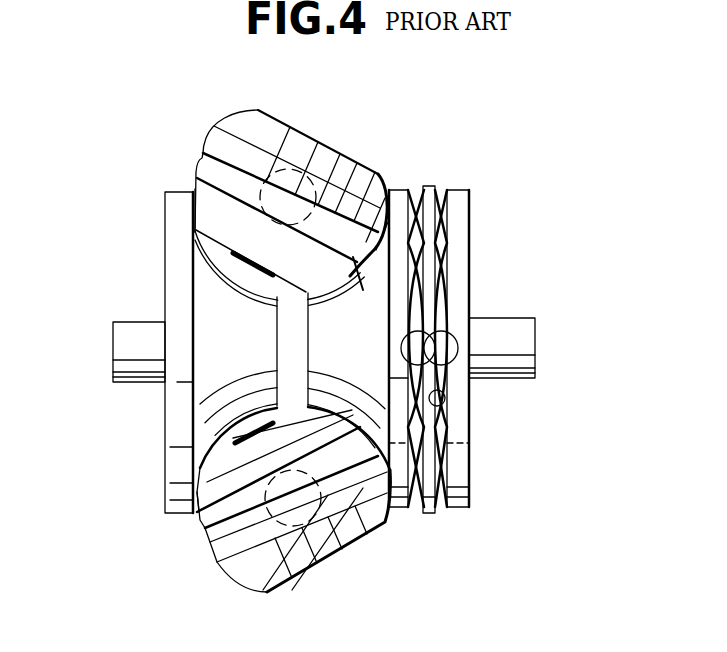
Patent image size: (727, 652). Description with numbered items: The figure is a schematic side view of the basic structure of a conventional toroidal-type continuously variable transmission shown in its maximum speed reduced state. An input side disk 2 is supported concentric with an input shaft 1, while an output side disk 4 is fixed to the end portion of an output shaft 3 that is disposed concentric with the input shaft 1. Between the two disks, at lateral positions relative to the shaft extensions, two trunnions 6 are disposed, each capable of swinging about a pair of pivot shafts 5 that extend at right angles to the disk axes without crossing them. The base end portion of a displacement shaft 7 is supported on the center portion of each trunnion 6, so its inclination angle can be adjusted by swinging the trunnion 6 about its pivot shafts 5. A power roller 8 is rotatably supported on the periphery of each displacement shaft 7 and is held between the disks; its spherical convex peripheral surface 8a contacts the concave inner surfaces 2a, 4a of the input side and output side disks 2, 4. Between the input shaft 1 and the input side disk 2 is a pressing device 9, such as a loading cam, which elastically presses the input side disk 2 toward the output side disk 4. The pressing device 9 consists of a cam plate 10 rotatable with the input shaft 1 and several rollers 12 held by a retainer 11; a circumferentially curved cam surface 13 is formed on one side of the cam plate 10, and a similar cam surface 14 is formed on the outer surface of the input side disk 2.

The input shaft 1 is at (525, 343).
The input side disk 2 is at (393, 190).
The inner surface 2a is at (363, 290).
The output shaft 3 is at (120, 350).
The output side disk 4 is at (173, 252).
The inner surface 4a is at (250, 410).
The pivot shaft 5 is at (316, 140).
The trunnion 6 is at (222, 137).
The displacement shaft 7 is at (232, 270).
The power roller 8 is at (203, 193).
The peripheral surface 8a is at (190, 213).
The pressing device 9 is at (470, 347).
The cam plate 10 is at (457, 213).
The retainer 11 is at (430, 273).
The roller 12 is at (425, 186).
The cam surface 13 is at (435, 407).
The cam surface 14 is at (430, 493).